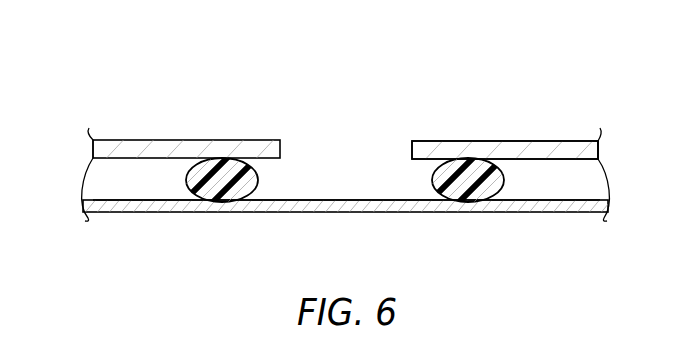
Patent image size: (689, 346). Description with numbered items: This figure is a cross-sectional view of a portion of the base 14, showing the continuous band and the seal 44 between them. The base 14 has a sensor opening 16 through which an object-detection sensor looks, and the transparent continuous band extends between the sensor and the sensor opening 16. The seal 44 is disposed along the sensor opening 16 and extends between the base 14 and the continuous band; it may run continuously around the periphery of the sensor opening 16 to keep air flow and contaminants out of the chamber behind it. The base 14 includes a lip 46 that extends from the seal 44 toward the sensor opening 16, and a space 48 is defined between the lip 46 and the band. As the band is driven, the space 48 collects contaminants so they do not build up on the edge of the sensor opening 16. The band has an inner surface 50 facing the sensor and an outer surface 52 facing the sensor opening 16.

The base 14 is at (533, 141).
The sensor opening 16 is at (343, 130).
The seal 44 is at (225, 188).
The lip 46 is at (278, 140).
The space 48 is at (270, 178).
The inner surface 50 is at (137, 212).
The outer surface 52 is at (157, 200).